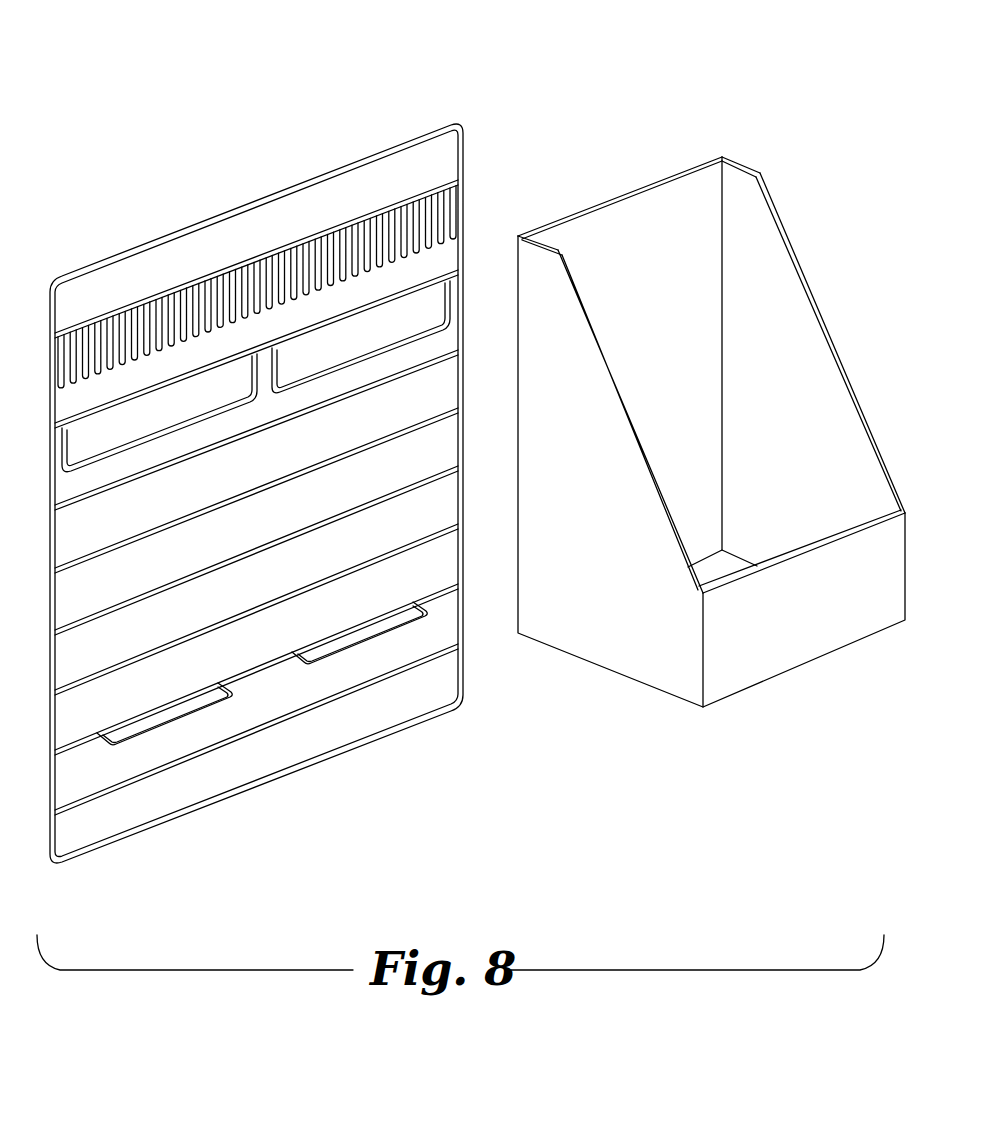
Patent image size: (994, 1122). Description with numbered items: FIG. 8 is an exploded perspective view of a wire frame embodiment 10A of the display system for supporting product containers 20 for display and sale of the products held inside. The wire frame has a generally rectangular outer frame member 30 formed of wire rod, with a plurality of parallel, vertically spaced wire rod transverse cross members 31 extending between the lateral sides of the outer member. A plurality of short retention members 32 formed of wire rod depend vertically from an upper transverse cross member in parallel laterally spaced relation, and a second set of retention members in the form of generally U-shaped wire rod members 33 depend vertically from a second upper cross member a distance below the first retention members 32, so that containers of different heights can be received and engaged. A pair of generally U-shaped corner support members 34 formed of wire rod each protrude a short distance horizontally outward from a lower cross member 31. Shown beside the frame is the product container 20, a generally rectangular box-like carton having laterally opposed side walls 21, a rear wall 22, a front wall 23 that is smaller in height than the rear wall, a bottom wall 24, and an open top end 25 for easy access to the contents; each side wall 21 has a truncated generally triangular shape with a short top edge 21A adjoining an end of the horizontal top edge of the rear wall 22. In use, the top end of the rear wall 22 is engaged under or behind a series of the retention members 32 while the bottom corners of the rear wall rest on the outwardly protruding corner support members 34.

The wire frame embodiment 10A is at (576, 84).
The product container 20 is at (805, 238).
The side wall 21 is at (801, 421).
The short top edge 21A is at (552, 245).
The rear wall 22 is at (682, 351).
The front wall 23 is at (812, 626).
The bottom wall 24 is at (729, 563).
The open top end 25 is at (737, 203).
The outer frame member 30 is at (238, 208).
The transverse cross members 31 is at (238, 263).
The retention members 32 is at (145, 312).
The U-shaped wire rod members 33 is at (460, 273).
The corner support members 34 is at (383, 633).